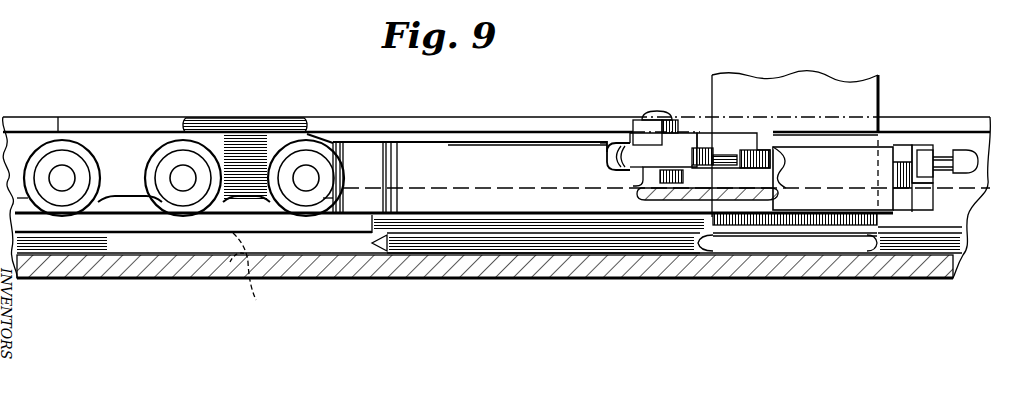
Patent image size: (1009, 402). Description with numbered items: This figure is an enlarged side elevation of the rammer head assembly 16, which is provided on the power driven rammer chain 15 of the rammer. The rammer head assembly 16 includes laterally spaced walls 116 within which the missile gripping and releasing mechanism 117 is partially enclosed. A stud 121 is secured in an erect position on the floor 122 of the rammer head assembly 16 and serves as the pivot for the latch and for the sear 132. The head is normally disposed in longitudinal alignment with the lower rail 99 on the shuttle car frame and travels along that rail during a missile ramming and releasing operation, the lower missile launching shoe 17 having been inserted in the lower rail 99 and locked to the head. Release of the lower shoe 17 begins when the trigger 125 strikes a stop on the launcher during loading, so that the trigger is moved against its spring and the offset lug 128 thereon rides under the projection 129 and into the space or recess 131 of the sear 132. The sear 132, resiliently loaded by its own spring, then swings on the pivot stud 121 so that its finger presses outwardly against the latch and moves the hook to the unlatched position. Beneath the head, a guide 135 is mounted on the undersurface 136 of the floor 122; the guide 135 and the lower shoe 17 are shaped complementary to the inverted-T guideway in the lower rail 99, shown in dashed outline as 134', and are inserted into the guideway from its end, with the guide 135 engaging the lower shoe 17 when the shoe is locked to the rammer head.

The rammer chain 15 is at (147, 115).
The rammer head assembly 16 is at (531, 140).
The lower missile launching shoe 17 is at (812, 100).
The lower rail 99 is at (158, 280).
The laterally spaced walls 116 is at (413, 153).
The missile gripping and releasing mechanism 117 is at (624, 139).
The stud 121 is at (654, 112).
The floor 122 is at (504, 187).
The trigger 125 is at (942, 153).
The offset lug 128 is at (765, 147).
The projection 129 is at (733, 147).
The recess 131 is at (703, 148).
The sear 132 is at (646, 163).
The roller 134' is at (256, 273).
The guide 135 is at (549, 250).
The undersurface 136 is at (857, 205).